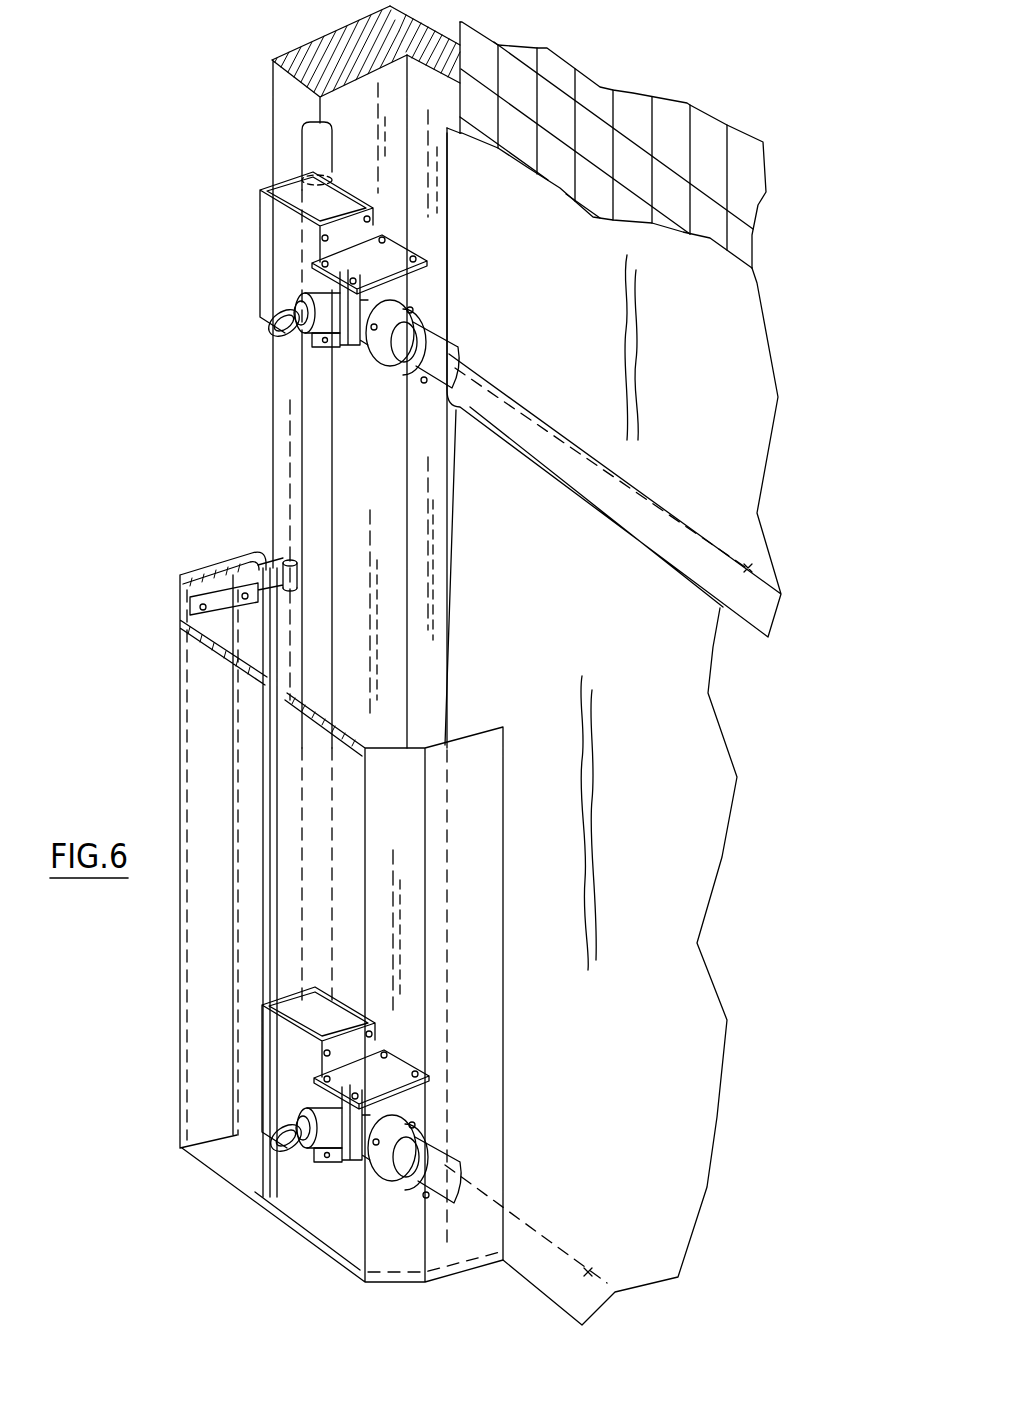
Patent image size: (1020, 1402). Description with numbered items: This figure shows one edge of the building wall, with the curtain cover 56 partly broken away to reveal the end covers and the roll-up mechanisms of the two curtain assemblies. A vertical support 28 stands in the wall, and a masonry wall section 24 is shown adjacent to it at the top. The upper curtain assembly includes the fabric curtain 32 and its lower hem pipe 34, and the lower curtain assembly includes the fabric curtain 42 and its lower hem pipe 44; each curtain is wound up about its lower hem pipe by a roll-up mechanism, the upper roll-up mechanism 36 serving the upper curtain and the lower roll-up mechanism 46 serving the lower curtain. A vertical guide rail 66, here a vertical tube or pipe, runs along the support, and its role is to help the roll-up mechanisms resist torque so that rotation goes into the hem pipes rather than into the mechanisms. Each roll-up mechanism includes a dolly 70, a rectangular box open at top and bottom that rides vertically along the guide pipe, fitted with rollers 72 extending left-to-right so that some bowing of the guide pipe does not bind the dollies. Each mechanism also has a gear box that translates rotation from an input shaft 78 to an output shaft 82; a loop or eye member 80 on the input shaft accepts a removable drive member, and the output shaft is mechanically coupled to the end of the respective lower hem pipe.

The wall 24 is at (745, 199).
The vertical support 28 is at (283, 110).
The fabric curtain 32 is at (762, 418).
The lower hem pipe 34 is at (441, 356).
The roll-up mechanism 36 is at (290, 293).
The fabric curtain 42 is at (687, 1100).
The lower hem pipe 44 is at (505, 1177).
The roll-up mechanism 46 is at (308, 1245).
The curtain cover 56 is at (182, 642).
The vertical guide rail 66 is at (322, 492).
The dolly 70 is at (262, 248).
The roller 72 is at (365, 222).
The input shaft 78 is at (328, 330).
The eye member 80 is at (272, 328).
The output shaft 82 is at (412, 300).